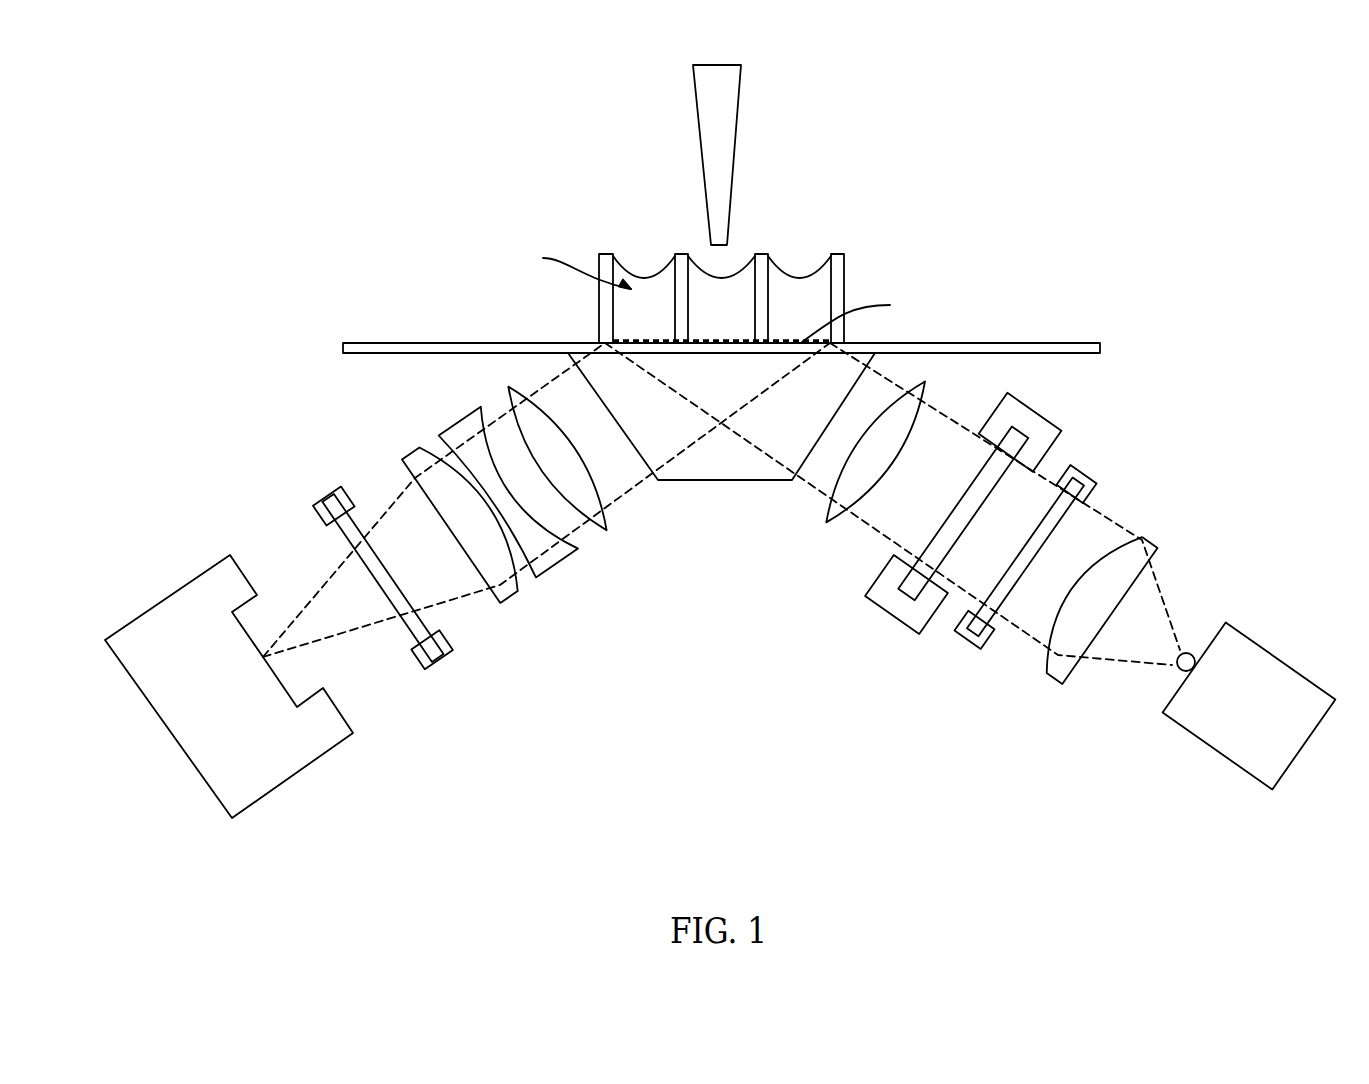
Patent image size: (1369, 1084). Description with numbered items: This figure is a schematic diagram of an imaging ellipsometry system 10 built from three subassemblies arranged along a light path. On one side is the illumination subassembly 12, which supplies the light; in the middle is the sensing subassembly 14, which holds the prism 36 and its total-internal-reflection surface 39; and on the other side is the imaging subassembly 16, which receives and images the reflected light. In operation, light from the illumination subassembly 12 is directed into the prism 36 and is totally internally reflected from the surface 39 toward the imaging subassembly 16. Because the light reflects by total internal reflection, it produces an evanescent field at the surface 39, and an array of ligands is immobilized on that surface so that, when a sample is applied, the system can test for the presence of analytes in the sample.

The imaging ellipsometry system 10 is at (708, 460).
The illumination subassembly 12 is at (784, 527).
The sensing subassembly 14 is at (746, 249).
The imaging subassembly 16 is at (518, 372).
The prism 36 is at (720, 462).
The surface 39 is at (634, 338).